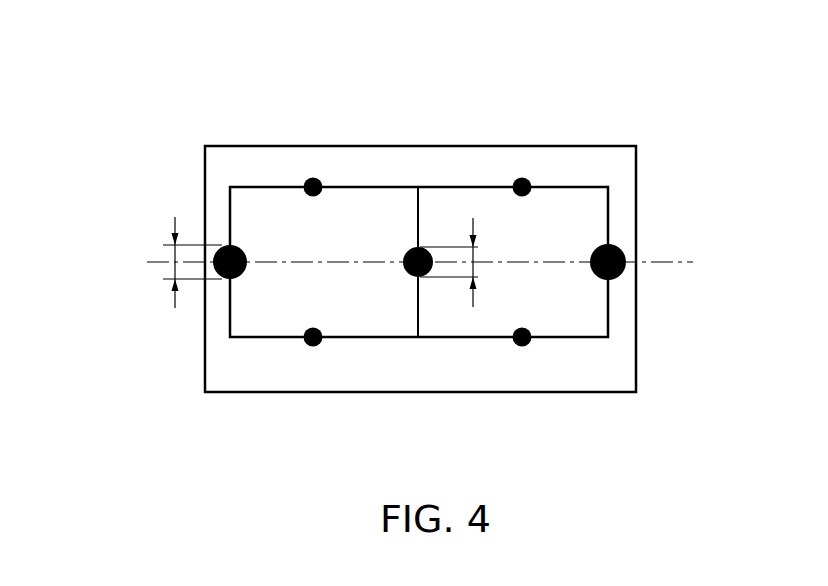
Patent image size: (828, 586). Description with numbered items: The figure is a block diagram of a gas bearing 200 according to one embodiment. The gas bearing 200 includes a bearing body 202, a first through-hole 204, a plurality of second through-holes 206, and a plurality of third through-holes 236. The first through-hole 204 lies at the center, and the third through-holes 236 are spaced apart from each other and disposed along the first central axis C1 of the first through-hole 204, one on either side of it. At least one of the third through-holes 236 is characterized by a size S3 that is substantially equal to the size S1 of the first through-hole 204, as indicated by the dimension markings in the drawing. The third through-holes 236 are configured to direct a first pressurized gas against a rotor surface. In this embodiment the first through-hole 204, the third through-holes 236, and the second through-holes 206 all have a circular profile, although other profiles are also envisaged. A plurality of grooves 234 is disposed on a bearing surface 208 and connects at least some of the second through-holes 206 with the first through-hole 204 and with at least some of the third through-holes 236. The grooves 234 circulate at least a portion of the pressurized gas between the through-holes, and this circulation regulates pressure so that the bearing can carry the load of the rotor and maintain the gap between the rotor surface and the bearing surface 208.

The gas bearing 200 is at (166, 60).
The bearing body 202 is at (637, 165).
The first through-hole 204 is at (408, 276).
The second through-holes 206 is at (513, 185).
The bearing surface 208 is at (627, 367).
The grooves 234 is at (563, 262).
The third through-holes 236 is at (236, 246).
The size of the first through-hole S1 is at (476, 268).
The size of the third through-hole S3 is at (173, 302).
The first central axis C1 is at (676, 262).